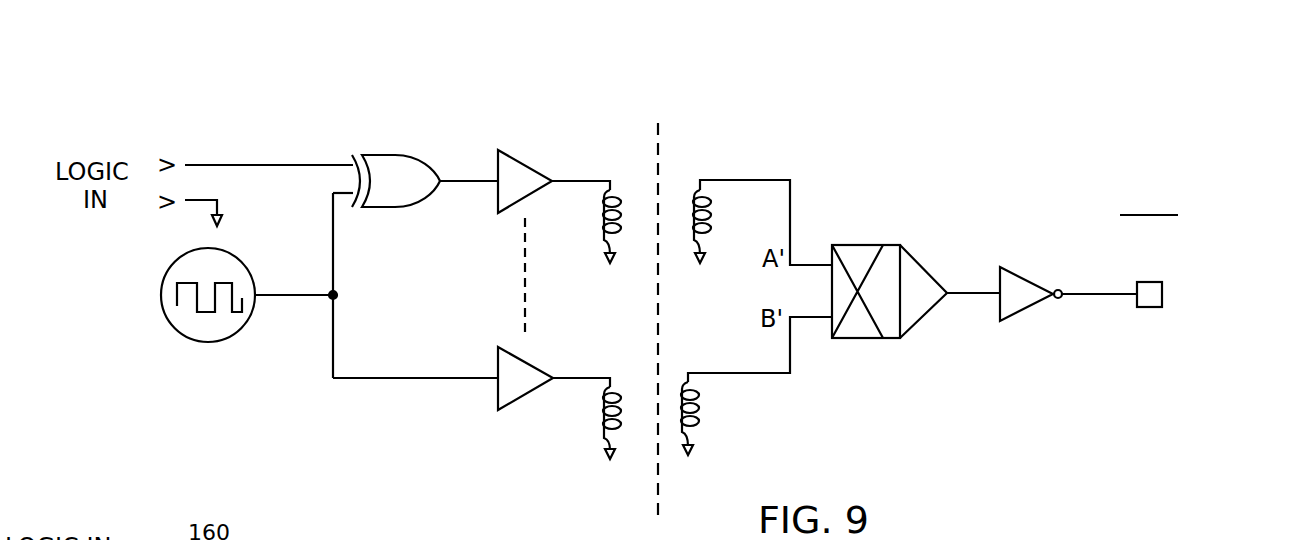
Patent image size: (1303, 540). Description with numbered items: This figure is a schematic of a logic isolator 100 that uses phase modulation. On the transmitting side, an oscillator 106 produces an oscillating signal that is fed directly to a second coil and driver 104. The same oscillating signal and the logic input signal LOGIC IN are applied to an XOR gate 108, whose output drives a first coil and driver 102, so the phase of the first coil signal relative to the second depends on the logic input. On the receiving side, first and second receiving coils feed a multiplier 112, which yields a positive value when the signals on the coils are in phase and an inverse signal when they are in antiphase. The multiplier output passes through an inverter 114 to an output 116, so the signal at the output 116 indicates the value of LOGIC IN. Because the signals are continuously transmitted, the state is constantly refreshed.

The logic isolator 100 is at (789, 99).
The first coil and driver 102 is at (615, 154).
The second coil and driver 104 is at (552, 421).
The oscillator 106 is at (240, 260).
The XOR gate 108 is at (397, 207).
The multiplier 112 is at (851, 245).
The inverter 114 is at (1023, 275).
The output 116 is at (1148, 308).